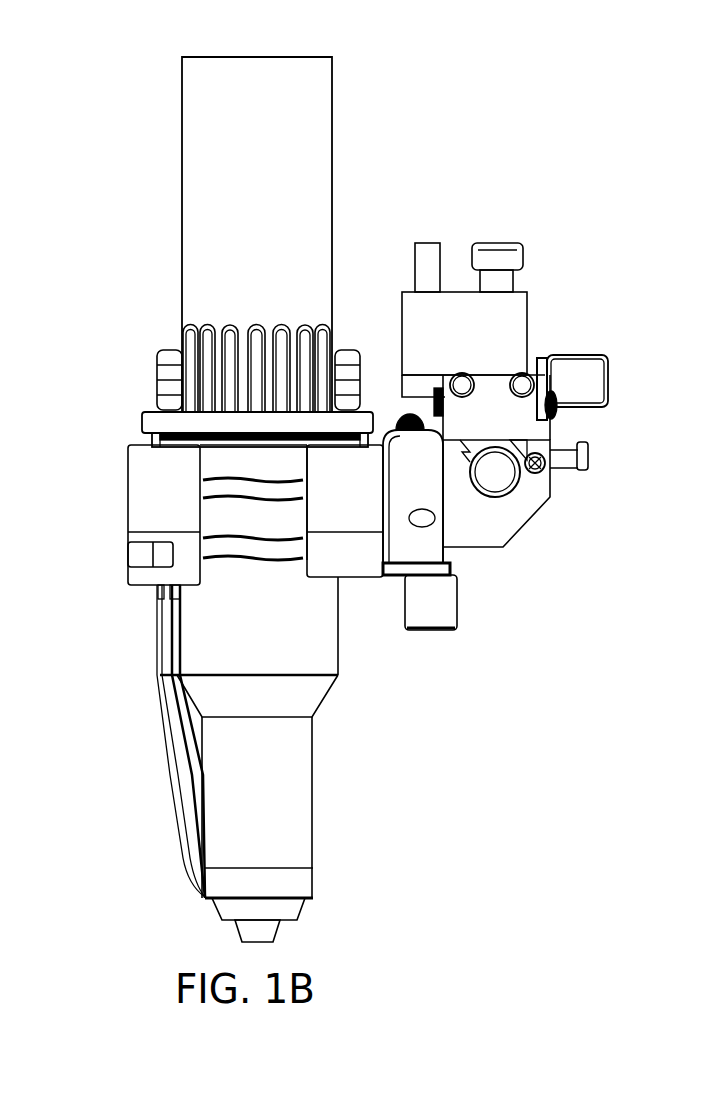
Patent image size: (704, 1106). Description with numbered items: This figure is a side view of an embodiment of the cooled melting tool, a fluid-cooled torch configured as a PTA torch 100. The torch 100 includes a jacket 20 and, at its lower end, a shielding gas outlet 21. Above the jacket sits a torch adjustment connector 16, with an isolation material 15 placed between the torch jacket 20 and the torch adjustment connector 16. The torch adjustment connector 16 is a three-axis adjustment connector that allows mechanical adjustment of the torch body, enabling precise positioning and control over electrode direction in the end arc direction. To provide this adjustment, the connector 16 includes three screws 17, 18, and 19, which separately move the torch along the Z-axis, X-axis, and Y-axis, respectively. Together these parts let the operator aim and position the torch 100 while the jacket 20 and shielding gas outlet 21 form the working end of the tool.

The PTA torch 100 is at (423, 77).
The isolation material 15 is at (383, 500).
The torch adjustment connector 16 is at (465, 428).
The screw 17 is at (438, 603).
The screw 18 is at (500, 470).
The screw 19 is at (600, 388).
The jacket 20 is at (258, 760).
The shielding gas outlet 21 is at (255, 910).